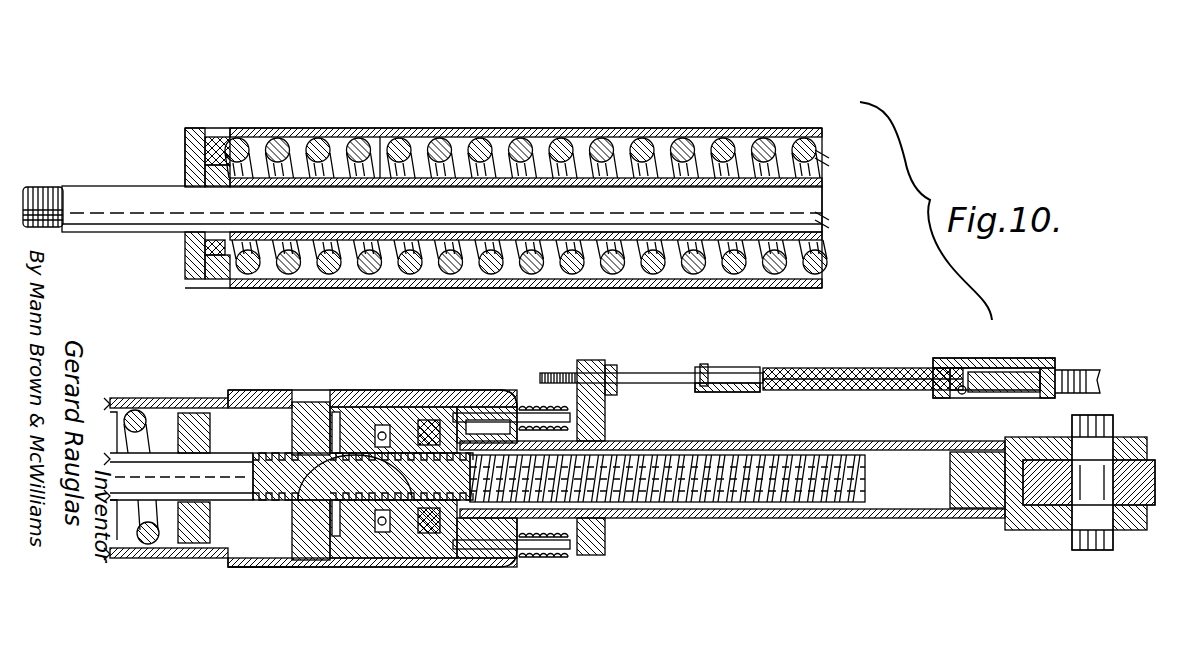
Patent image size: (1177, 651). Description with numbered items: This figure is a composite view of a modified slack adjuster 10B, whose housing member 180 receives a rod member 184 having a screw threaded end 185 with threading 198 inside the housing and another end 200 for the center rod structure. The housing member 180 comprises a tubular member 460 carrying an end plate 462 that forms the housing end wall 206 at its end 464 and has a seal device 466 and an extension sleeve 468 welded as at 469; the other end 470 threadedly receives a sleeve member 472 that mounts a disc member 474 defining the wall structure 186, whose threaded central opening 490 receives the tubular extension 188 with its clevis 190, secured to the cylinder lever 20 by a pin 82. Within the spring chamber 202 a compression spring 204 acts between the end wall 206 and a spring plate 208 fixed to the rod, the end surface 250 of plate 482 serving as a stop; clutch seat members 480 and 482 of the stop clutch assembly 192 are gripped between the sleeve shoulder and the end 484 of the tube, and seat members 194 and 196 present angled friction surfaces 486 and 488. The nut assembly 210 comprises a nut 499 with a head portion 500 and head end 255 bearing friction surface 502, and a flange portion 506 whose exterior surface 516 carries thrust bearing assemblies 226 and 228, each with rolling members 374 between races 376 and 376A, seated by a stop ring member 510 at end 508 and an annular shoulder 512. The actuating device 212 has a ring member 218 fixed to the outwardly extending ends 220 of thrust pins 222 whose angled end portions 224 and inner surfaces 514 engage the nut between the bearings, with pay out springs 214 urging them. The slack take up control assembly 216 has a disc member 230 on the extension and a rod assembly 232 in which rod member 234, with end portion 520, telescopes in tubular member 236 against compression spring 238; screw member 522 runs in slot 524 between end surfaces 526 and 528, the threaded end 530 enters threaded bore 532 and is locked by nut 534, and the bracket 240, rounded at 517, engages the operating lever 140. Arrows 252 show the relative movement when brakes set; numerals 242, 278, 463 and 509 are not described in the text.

The slack adjuster 10B is at (435, 117).
The cylinder lever 20 is at (1060, 505).
The pin 82 is at (1095, 425).
The operating lever 140 is at (1030, 372).
The housing member 180 is at (356, 295).
The rod member 184 is at (145, 239).
The screw threaded end 185 is at (710, 462).
The wall structure 186 is at (495, 392).
The tubular extension 188 is at (720, 518).
The clevis 190 is at (1020, 530).
The stop clutch assembly 192 is at (362, 380).
The seat member 194 is at (390, 412).
The seat member 196 is at (300, 402).
The threading 198 is at (689, 512).
The other end 200 is at (80, 186).
The spring chamber 202 is at (628, 140).
The compression spring 204 is at (719, 132).
The housing end wall 206 is at (185, 128).
The spring plate 208 is at (196, 413).
The nut assembly 210 is at (350, 555).
The actuating device 212 is at (492, 550).
The pay out springs 214 is at (530, 402).
The slack take up control assembly 216 is at (755, 368).
The ring member 218 is at (568, 550).
The outwardly extending ends 220 is at (580, 550).
The thrust pins 222 is at (518, 560).
The angled end portions 224 is at (400, 560).
The thrust bearing assembly 226 is at (428, 560).
The thrust bearing assembly 228 is at (385, 560).
The disc member 230 is at (605, 548).
The control or thrust rod assembly 232 is at (860, 368).
The rod member 234 is at (655, 373).
The tubular member 236 is at (890, 368).
The compression spring 238 is at (800, 368).
The bracket 240 is at (1000, 358).
The shaft 242 is at (1078, 372).
The end surface 250 is at (268, 567).
The arrows 252 is at (317, 116).
The head end 255 is at (370, 410).
The clutch plate 278 is at (410, 410).
The rolling members 374 is at (405, 476).
The race member 376 is at (412, 374).
The race member 376A is at (430, 415).
The tubular member 460 is at (485, 128).
The end plate 462 is at (190, 160).
The bushing 463 is at (200, 140).
The annular locating flange 464 is at (212, 255).
The seal device 466 is at (185, 245).
The extension sleeve 468 is at (380, 137).
The weld 469 is at (225, 265).
The other end 470 is at (247, 390).
The sleeve member 472 is at (440, 412).
The disc member 474 is at (478, 566).
The clutch seat member 480 is at (360, 560).
The clutch seat member 482 is at (315, 560).
The end 484 is at (295, 567).
The angled friction surface 486 is at (385, 410).
The angled friction surface 488 is at (336, 412).
The threaded central opening 490 is at (577, 441).
The nut 499 is at (392, 500).
The head portion 500 is at (372, 508).
The angled friction surface 502 is at (372, 560).
The flange portion 506 is at (440, 420).
The end 508 is at (487, 482).
The spring 509 is at (335, 555).
The stop ring member 510 is at (452, 420).
The annular shoulder 512 is at (375, 436).
The inner surfaces 514 is at (363, 476).
The exterior surface 516 is at (410, 467).
The convexly rounded portion 517 is at (962, 395).
The end portion 520 is at (798, 359).
The screw member 522 is at (704, 364).
The slot 524 is at (722, 367).
The end surface 526 is at (700, 370).
The end surface 528 is at (790, 368).
The end 530 is at (568, 373).
The threaded bore 532 is at (610, 365).
The nut 534 is at (617, 395).